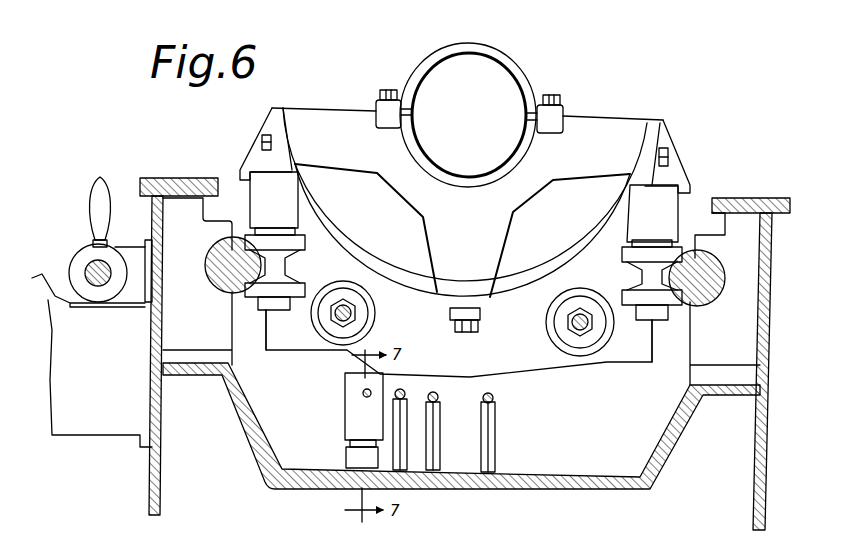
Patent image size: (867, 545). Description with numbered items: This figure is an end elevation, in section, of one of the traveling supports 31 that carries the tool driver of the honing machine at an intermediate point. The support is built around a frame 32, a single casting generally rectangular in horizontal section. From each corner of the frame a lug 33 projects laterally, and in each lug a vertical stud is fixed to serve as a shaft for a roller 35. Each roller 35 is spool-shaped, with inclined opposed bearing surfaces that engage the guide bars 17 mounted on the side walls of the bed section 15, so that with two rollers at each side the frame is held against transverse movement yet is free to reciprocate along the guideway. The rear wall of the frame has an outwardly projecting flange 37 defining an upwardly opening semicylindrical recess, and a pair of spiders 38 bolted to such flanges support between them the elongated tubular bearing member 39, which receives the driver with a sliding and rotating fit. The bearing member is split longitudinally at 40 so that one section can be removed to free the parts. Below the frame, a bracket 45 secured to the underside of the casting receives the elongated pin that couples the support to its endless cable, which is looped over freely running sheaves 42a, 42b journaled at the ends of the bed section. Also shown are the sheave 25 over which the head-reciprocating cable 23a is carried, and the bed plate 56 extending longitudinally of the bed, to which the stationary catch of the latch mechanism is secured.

The bed section 15 is at (771, 334).
The guide bars 17 is at (224, 290).
The flexible cable 23a is at (494, 397).
The sheave 25 is at (496, 443).
The traveling support 31 is at (664, 116).
The frame 32 is at (633, 362).
The lug 33 is at (252, 198).
The roller 35 is at (285, 269).
The flange 37 is at (418, 302).
The spider 38 is at (338, 110).
The tubular bearing member 39 is at (521, 74).
The longitudinal split 40 is at (537, 118).
The sheave 42a is at (406, 399).
The sheave 42b is at (440, 408).
The bracket 45 is at (349, 407).
The bed plate 56 is at (598, 489).